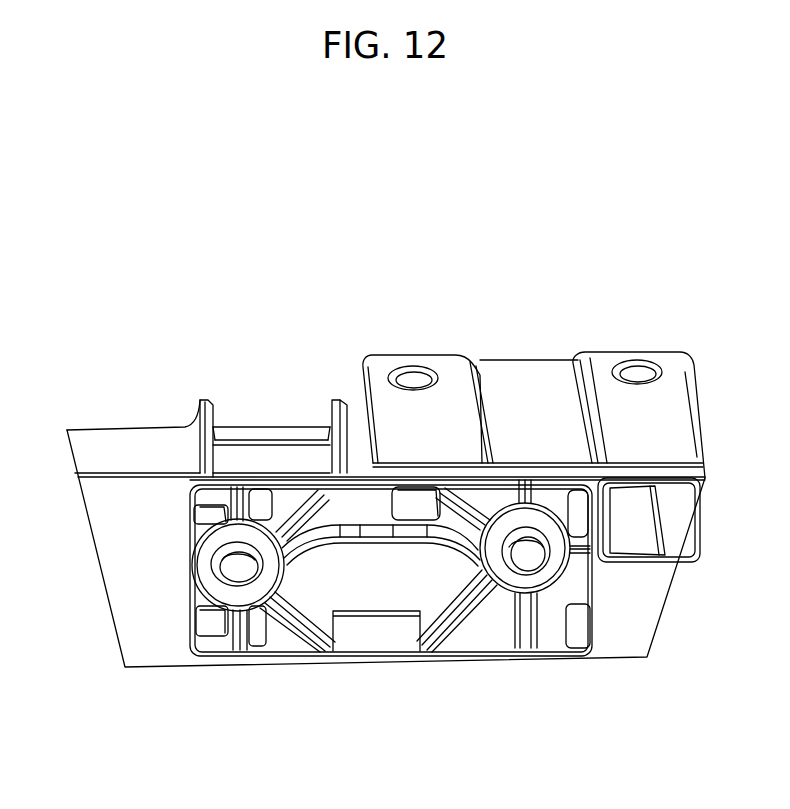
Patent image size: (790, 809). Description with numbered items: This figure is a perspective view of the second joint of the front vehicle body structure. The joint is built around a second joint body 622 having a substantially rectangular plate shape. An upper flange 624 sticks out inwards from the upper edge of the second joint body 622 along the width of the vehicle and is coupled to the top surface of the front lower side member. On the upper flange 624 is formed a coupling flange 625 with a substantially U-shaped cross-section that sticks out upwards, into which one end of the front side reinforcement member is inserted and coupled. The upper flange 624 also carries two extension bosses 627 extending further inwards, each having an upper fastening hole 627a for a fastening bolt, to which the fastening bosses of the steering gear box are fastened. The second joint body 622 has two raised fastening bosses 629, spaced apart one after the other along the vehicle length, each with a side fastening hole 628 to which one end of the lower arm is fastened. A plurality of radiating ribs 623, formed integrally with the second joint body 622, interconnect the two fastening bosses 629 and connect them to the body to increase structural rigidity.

The second joint body 622 is at (140, 622).
The radiating ribs 623 is at (408, 545).
The upper flange 624 is at (123, 443).
The coupling flange 625 is at (258, 447).
The extension boss 627 is at (437, 365).
The upper fastening hole 627a is at (413, 378).
The side fastening hole 628 is at (236, 558).
The fastening boss 629 is at (260, 590).